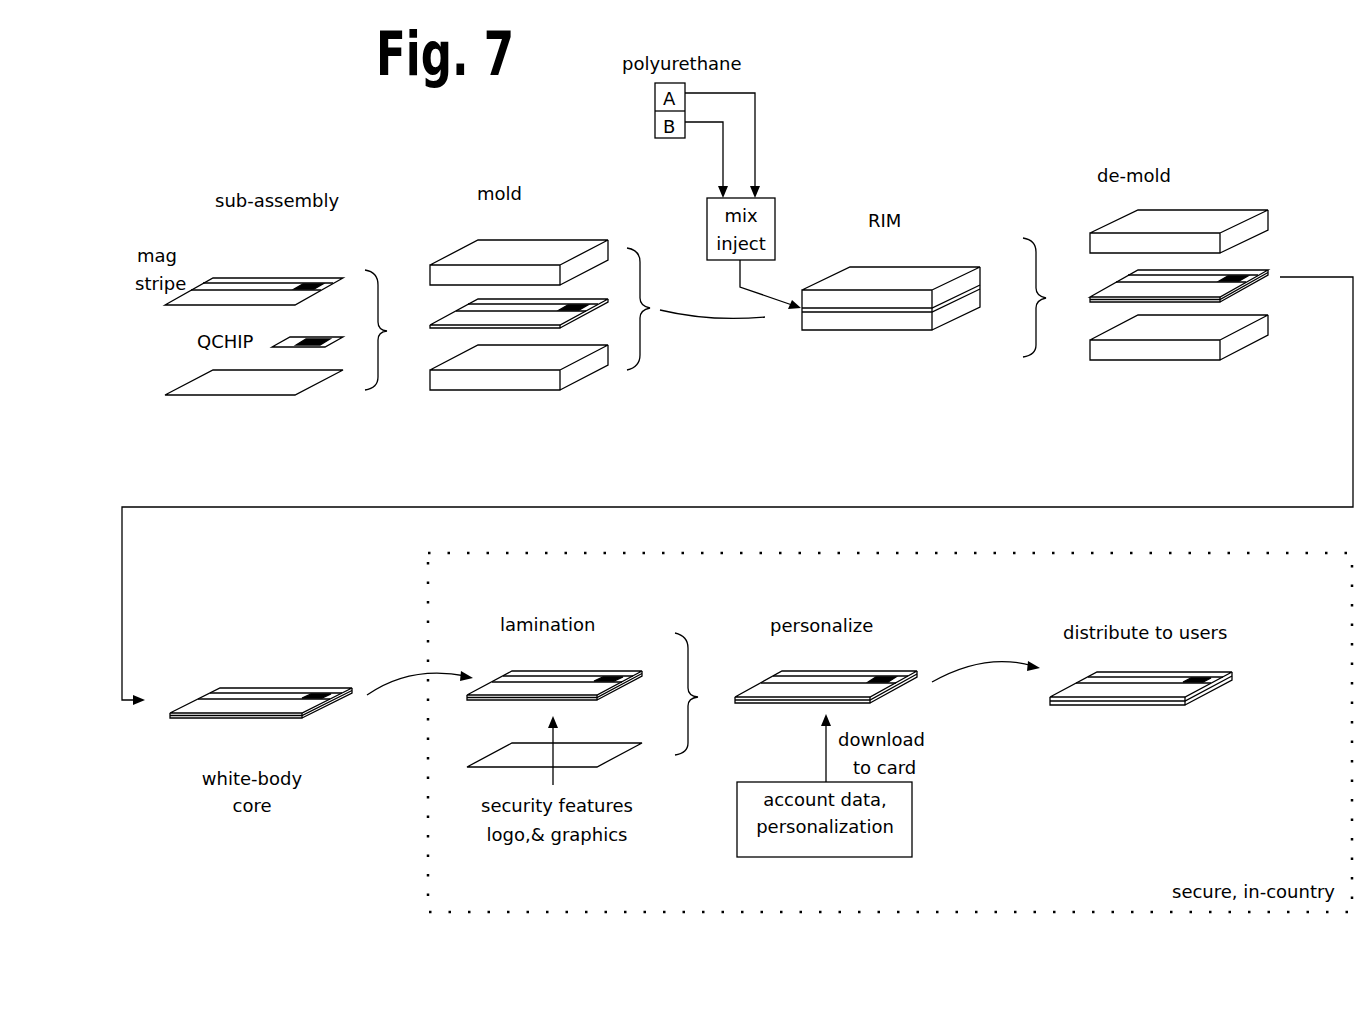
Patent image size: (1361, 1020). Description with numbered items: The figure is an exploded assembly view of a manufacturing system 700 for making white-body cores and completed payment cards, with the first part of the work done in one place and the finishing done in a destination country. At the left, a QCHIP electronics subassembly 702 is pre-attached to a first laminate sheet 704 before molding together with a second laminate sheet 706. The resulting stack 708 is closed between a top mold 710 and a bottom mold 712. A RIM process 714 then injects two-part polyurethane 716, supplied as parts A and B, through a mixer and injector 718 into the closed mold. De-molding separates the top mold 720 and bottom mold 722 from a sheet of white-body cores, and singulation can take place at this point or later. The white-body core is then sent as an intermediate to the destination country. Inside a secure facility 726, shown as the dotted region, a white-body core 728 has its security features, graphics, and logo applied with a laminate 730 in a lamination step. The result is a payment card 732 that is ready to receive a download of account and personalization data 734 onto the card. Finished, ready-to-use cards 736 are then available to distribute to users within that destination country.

The manufacturing system 700 is at (303, 102).
The QCHIP electronics subassembly 702 is at (302, 340).
The first laminate sheet 704 is at (243, 278).
The second laminate sheet 706 is at (262, 398).
The stack 708 is at (452, 318).
The top mold 710 is at (463, 250).
The bottom mold 712 is at (492, 390).
The RIM process 714 is at (875, 332).
The two-part polyurethane 716 is at (672, 140).
The mixer and injector 718 is at (707, 245).
The top mold 720 is at (1125, 222).
The bottom mold 722 is at (1135, 360).
The secure facility 726 is at (1212, 851).
The white-body core 728 is at (572, 670).
The laminate 730 is at (612, 750).
The payment card 732 is at (848, 670).
The account and personalization data 734 is at (950, 800).
The finished ready-to-use cards 736 is at (1103, 705).